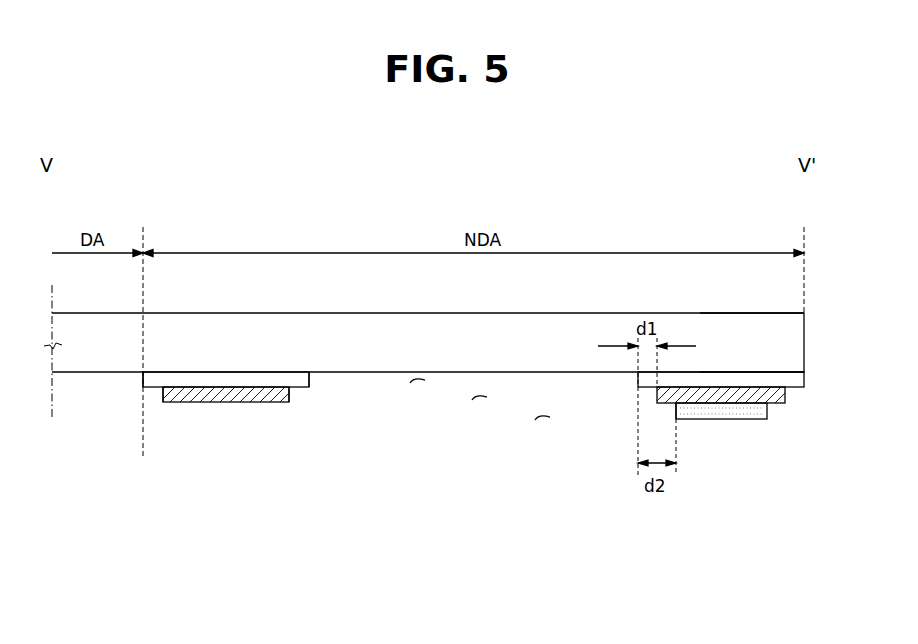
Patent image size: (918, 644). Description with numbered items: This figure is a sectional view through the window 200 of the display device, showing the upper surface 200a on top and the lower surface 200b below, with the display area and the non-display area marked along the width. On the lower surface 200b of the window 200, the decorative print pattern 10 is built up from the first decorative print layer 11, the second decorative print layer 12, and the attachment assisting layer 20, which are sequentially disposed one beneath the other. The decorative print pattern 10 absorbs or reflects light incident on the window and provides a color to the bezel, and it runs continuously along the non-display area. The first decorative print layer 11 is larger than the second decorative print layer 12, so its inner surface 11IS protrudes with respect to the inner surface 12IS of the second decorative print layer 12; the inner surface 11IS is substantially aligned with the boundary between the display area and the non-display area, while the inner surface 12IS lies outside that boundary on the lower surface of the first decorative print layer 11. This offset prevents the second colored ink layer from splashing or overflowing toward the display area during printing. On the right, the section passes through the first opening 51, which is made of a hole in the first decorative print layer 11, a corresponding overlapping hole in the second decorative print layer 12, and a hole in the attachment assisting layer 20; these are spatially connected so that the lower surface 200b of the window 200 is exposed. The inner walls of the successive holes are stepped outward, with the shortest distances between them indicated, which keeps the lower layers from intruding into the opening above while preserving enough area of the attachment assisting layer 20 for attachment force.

The window 200 is at (738, 320).
The upper surface of the window 200a is at (771, 313).
The lower surface of the window 200b is at (772, 372).
The decorative print pattern 10 is at (495, 415).
The first decorative print layer 11 is at (145, 379).
The second decorative print layer 12 is at (186, 403).
The attachment assisting layer 20 is at (764, 412).
The inner surface of the first decorative print layer 11IS is at (143, 376).
The inner surface of the second decorative print layer 12IS is at (163, 394).
The first opening 51 is at (472, 486).